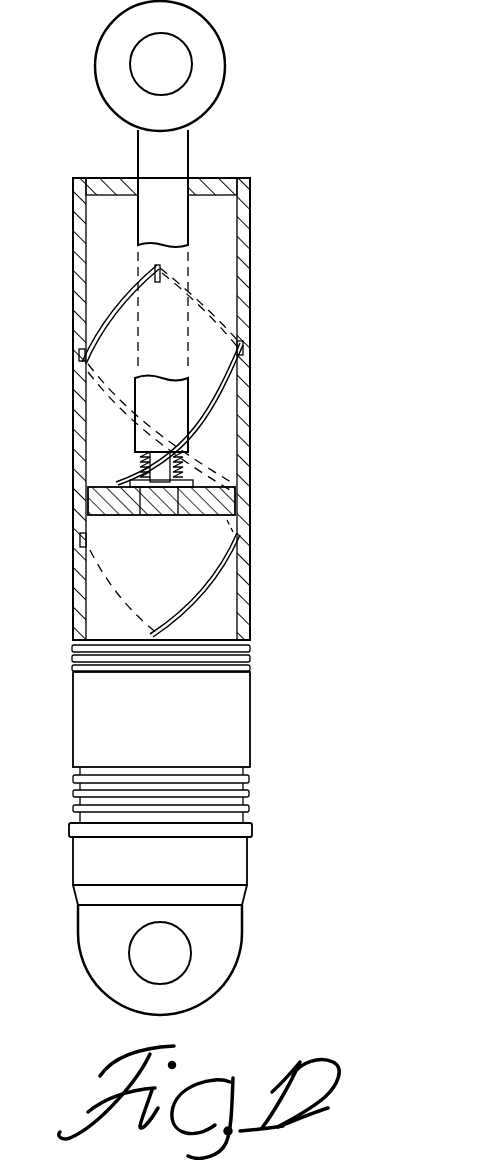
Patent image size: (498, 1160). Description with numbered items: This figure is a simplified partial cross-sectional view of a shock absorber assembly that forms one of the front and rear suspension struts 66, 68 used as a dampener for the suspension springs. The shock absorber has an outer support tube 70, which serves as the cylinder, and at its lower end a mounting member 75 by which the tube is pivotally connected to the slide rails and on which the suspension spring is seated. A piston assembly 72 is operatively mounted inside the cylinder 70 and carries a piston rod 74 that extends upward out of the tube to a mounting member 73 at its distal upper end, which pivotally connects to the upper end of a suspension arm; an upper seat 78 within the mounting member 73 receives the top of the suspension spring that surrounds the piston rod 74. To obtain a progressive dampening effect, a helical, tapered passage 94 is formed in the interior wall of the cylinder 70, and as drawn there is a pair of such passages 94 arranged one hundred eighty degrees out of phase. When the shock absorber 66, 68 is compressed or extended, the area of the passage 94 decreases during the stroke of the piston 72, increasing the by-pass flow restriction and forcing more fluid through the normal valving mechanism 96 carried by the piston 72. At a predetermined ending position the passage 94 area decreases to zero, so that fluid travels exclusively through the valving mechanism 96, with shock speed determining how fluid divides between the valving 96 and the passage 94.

The front suspension strut 66 is at (232, 864).
The rear suspension strut 68 is at (252, 832).
The outer support tube 70 is at (248, 238).
The piston assembly 72 is at (120, 517).
The mounting member 73 is at (217, 82).
The piston rod 74 is at (175, 148).
The mounting member 75 is at (210, 978).
The upper seat 78 is at (180, 52).
The helical tapered passage 94 is at (122, 296).
The valving mechanism 96 is at (193, 480).